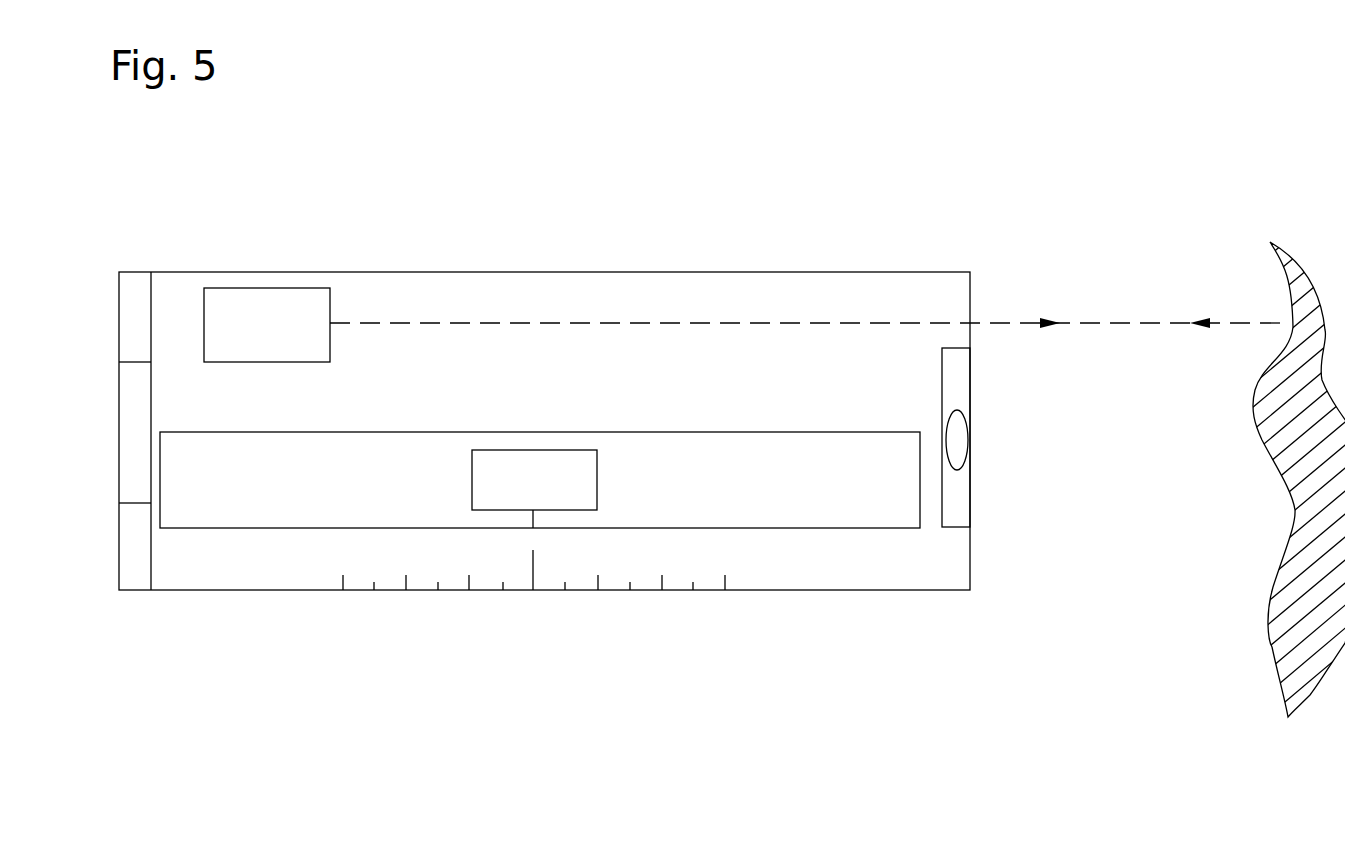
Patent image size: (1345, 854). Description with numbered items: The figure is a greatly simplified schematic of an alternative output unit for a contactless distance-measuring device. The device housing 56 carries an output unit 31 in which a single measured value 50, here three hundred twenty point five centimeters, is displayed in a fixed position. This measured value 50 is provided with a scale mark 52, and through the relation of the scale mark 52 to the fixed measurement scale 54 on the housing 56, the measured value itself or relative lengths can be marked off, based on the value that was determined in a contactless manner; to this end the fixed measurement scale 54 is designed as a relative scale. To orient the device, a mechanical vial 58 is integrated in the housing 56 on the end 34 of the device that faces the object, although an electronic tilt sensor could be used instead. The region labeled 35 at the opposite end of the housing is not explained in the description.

The output unit 31 is at (587, 458).
The end of the device 34 is at (1000, 282).
The handle section 35 is at (100, 554).
The measured value 50 is at (514, 462).
The scale mark 52 is at (548, 522).
The fixed measurement scale 54 is at (324, 587).
The device housing 56 is at (950, 572).
The mechanical vial 58 is at (955, 490).